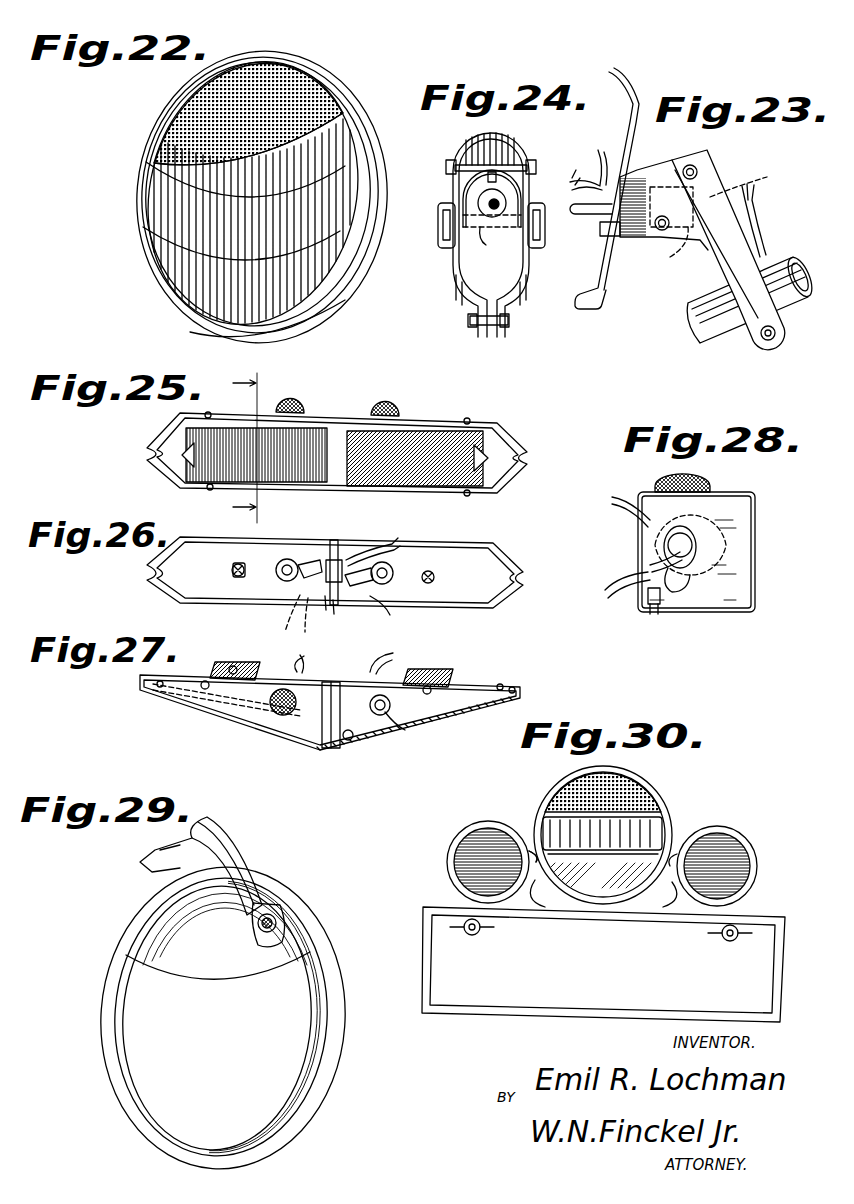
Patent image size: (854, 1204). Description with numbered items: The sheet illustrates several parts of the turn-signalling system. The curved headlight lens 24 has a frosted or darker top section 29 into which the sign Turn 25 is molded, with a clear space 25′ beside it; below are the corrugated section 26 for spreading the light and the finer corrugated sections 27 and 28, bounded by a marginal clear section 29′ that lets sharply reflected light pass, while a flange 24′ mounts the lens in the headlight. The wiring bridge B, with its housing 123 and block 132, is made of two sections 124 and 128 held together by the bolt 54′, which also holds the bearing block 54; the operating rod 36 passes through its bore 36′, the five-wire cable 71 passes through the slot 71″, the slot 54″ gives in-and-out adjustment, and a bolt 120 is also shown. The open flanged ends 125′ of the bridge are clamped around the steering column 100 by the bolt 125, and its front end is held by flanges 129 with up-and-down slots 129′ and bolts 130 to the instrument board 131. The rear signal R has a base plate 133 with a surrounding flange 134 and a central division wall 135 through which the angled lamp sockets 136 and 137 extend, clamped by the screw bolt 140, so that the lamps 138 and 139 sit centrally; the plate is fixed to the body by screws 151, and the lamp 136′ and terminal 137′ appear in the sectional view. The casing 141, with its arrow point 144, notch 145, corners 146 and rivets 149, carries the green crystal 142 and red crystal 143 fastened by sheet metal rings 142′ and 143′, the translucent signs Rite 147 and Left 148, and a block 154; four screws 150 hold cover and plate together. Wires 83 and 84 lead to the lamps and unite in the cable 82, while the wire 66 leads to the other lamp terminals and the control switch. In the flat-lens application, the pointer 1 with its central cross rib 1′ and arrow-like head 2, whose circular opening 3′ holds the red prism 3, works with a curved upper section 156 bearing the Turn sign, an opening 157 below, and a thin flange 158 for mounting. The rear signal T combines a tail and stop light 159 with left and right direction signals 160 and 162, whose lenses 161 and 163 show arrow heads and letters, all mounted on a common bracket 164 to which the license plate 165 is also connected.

In FIG. 29, the pointer 1 is at (236, 862).
In FIG. 29, the central cross rib 1′ is at (186, 838).
In FIG. 29, the arrow-like head 2 is at (265, 945).
In FIG. 29, the transparent glass prism 3 is at (275, 915).
In FIG. 29, the circular opening 3′ is at (266, 905).
In FIG. 22, the curved lens 24 is at (320, 63).
In FIG. 22, the flange 24′ is at (357, 127).
In FIG. 22, the sign Turn 25 is at (190, 124).
In FIG. 29, the sign Turn 25 is at (148, 952).
In FIG. 22, the clear space 25′ is at (318, 100).
In FIG. 22, the lens section 26 is at (155, 206).
In FIG. 22, the lens section 27 is at (160, 150).
In FIG. 22, the lens section 28 is at (176, 269).
In FIG. 25, the lens section 28 is at (256, 448).
In FIG. 22, the top section 29 is at (250, 72).
In FIG. 29, the top section 29 is at (196, 905).
In FIG. 22, the marginal clear section 29′ is at (340, 266).
In FIG. 23, the operating rod 36 is at (570, 209).
In FIG. 24, the bore 36′ is at (500, 206).
In FIG. 23, the bore 36′ is at (768, 176).
In FIG. 24, the bearing block 54 is at (470, 198).
In FIG. 23, the bearing block 54 is at (627, 240).
In FIG. 24, the bolt 54′ is at (477, 230).
In FIG. 23, the bolt 54′ is at (662, 232).
In FIG. 26, the wire 66 is at (396, 542).
In FIG. 28, the wire 66 is at (612, 500).
In FIG. 23, the cable 71 is at (762, 232).
In FIG. 23, the cable 82 is at (590, 168).
In FIG. 26, the wire 83 is at (285, 630).
In FIG. 28, the wire 83 is at (605, 592).
In FIG. 26, the wire 84 is at (305, 628).
In FIG. 28, the wire 84 is at (622, 596).
In FIG. 23, the steering column 100 is at (716, 344).
In FIG. 24, the bolt 120 is at (491, 166).
In FIG. 23, the bolt 120 is at (697, 170).
In FIG. 24, the housing 123 is at (462, 150).
In FIG. 24, the bridge section 124 is at (524, 272).
In FIG. 23, the bridge section 124 is at (700, 262).
In FIG. 24, the bolt 125 is at (510, 322).
In FIG. 23, the bolt 125 is at (766, 342).
In FIG. 24, the open flanged ends 125′ is at (483, 340).
In FIG. 24, the bridge section 128 is at (491, 235).
In FIG. 23, the bridge section 128 is at (637, 170).
In FIG. 24, the flanges 129 is at (446, 217).
In FIG. 24, the slots 129′ is at (445, 236).
In FIG. 23, the bolts 130 is at (603, 236).
In FIG. 23, the instrument board 131 is at (620, 292).
In FIG. 23, the block 132 is at (672, 160).
In FIG. 26, the base plate 133 is at (440, 552).
In FIG. 26, the surrounding flange 134 is at (494, 541).
In FIG. 26, the central division wall 135 is at (334, 558).
In FIG. 27, the central division wall 135 is at (331, 715).
In FIG. 28, the central division wall 135 is at (735, 583).
In FIG. 26, the lamp socket 136 is at (320, 562).
In FIG. 28, the bulb 136′ is at (664, 535).
In FIG. 26, the lamp socket 137 is at (336, 598).
In FIG. 28, the terminal 137′ is at (645, 567).
In FIG. 26, the lamp 138 is at (275, 568).
In FIG. 26, the lamp 139 is at (395, 588).
In FIG. 27, the lamp 139 is at (420, 712).
In FIG. 26, the screw bolt 140 is at (345, 566).
In FIG. 27, the screw bolt 140 is at (381, 716).
In FIG. 28, the screw bolt 140 is at (722, 545).
In FIG. 25, the casing 141 is at (484, 428).
In FIG. 27, the casing 141 is at (521, 690).
In FIG. 25, the green crystal 142 is at (396, 410).
In FIG. 25, the sheet metal ring 142′ is at (432, 422).
In FIG. 25, the red crystal 143 is at (291, 398).
In FIG. 27, the red crystal 143 is at (271, 709).
In FIG. 28, the red crystal 143 is at (703, 480).
In FIG. 25, the sheet metal ring 143′ is at (300, 413).
In FIG. 28, the sheet metal ring 143′ is at (655, 488).
In FIG. 25, the plate tip 144 is at (515, 460).
In FIG. 25, the fishtail notch 145 is at (150, 453).
In FIG. 25, the plate corner 146 is at (165, 438).
In FIG. 25, the glass sign Rite 147 is at (498, 488).
In FIG. 27, the glass sign Rite 147 is at (456, 716).
In FIG. 25, the sign Left 148 is at (175, 480).
In FIG. 27, the rivet 149 is at (166, 680).
In FIG. 25, the screws 150 is at (211, 413).
In FIG. 27, the screws 150 is at (202, 688).
In FIG. 28, the screws 150 is at (658, 614).
In FIG. 26, the screws 151 is at (436, 577).
In FIG. 27, the screws 151 is at (233, 666).
In FIG. 27, the block 154 is at (448, 678).
In FIG. 29, the curved upper section 156 is at (178, 966).
In FIG. 29, the opening 157 is at (126, 1050).
In FIG. 29, the thin flange 158 is at (318, 967).
In FIG. 30, the combination tail and stop light 159 is at (552, 782).
In FIG. 30, the left direction signal 160 is at (478, 826).
In FIG. 30, the left direction signal lens 161 is at (454, 843).
In FIG. 30, the right direction signal 162 is at (733, 832).
In FIG. 30, the right direction signal lens 163 is at (758, 854).
In FIG. 30, the common bracket or holder 164 is at (675, 826).
In FIG. 30, the license plate 165 is at (468, 1002).
In FIG. 24, the wiring bridge B is at (456, 272).
In FIG. 23, the wiring bridge B is at (728, 172).
In FIG. 25, the rear signal R is at (358, 420).
In FIG. 27, the rear signal R is at (232, 718).
In FIG. 28, the rear signal R is at (757, 526).
In FIG. 30, the rear signal T is at (665, 795).